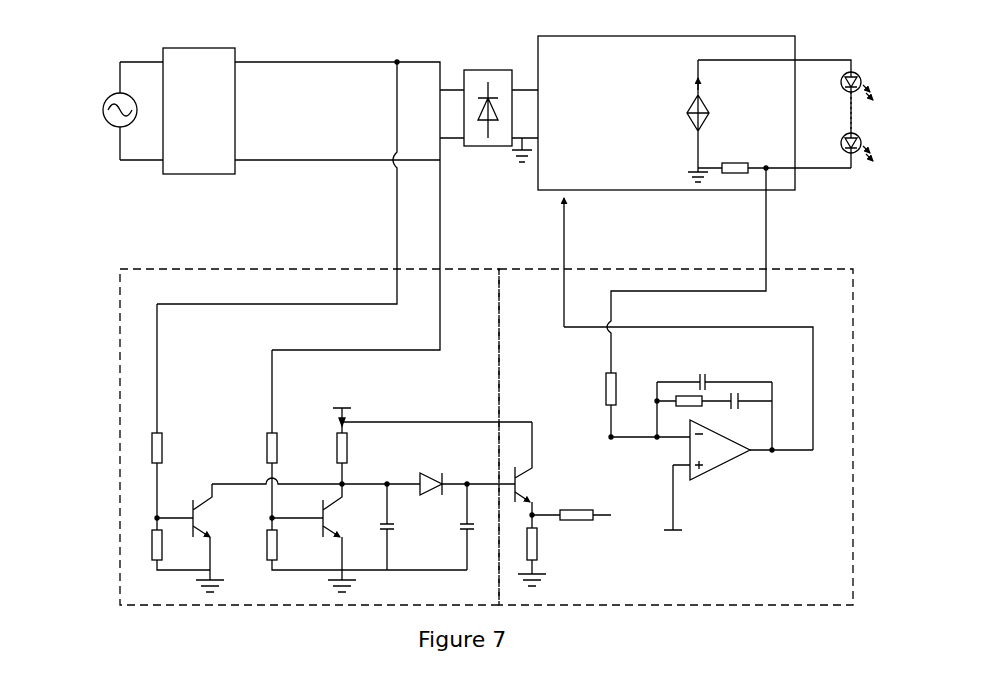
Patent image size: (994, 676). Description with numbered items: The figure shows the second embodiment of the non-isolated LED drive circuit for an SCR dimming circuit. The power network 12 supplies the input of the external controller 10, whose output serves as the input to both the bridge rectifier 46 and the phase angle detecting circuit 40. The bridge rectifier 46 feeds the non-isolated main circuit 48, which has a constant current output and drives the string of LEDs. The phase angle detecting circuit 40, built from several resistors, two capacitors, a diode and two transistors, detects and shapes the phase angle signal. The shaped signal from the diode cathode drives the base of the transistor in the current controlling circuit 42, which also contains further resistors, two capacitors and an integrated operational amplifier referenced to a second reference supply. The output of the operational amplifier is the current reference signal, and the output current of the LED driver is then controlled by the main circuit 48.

The external controller 10 is at (215, 47).
The power network 12 is at (107, 98).
The phase angle detecting circuit 40 is at (127, 266).
The current controlling circuit 42 is at (833, 262).
The bridge rectifier 46 is at (485, 70).
The main circuit 48 is at (688, 36).